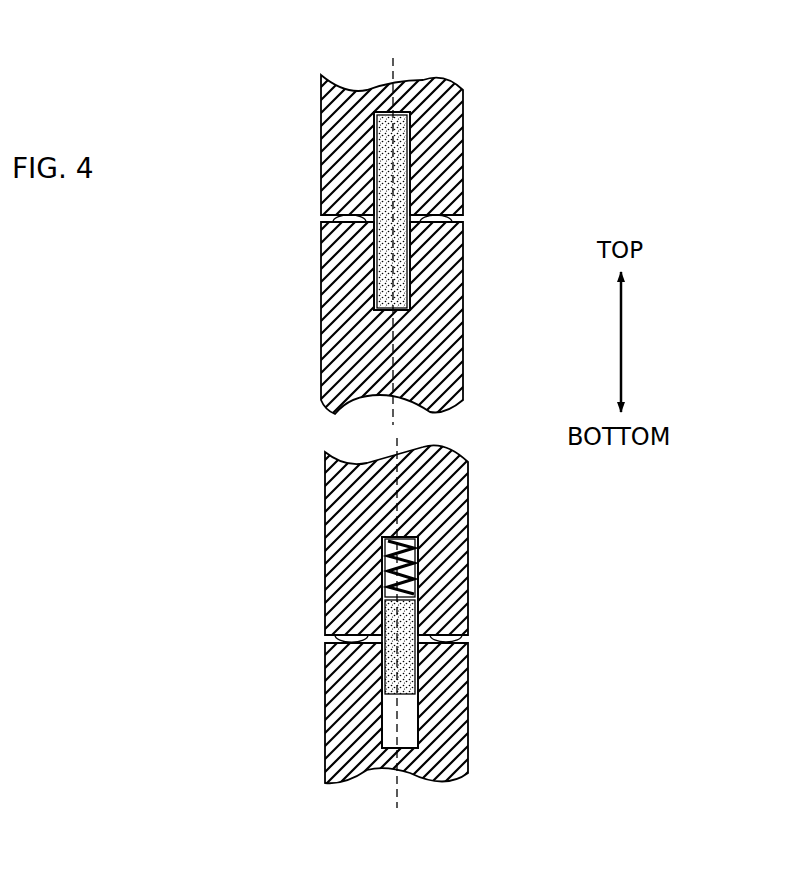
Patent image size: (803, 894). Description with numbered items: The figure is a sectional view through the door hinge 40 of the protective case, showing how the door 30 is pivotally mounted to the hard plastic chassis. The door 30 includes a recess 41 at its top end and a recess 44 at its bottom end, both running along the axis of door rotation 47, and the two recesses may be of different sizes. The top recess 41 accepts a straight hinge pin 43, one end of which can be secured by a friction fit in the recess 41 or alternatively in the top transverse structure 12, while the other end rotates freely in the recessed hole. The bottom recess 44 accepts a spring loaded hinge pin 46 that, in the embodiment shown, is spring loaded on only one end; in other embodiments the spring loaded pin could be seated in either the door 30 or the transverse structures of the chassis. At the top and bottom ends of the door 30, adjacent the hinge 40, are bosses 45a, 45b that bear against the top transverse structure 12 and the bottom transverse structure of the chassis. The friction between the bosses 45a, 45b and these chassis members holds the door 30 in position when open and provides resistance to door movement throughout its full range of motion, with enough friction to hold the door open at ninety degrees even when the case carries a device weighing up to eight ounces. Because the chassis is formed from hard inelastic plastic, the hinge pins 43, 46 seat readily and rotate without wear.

The door hinge 40 is at (46, 33).
The top transverse structure 12 is at (466, 140).
The door 30 is at (433, 482).
The door recess 41 is at (375, 292).
The straight hinge pin 43 is at (395, 182).
The door recess 44 is at (380, 582).
The boss 45a is at (338, 222).
The boss 45b is at (342, 640).
The spring loaded hinge pin 46 is at (403, 609).
The axis of door rotation 47 is at (401, 423).